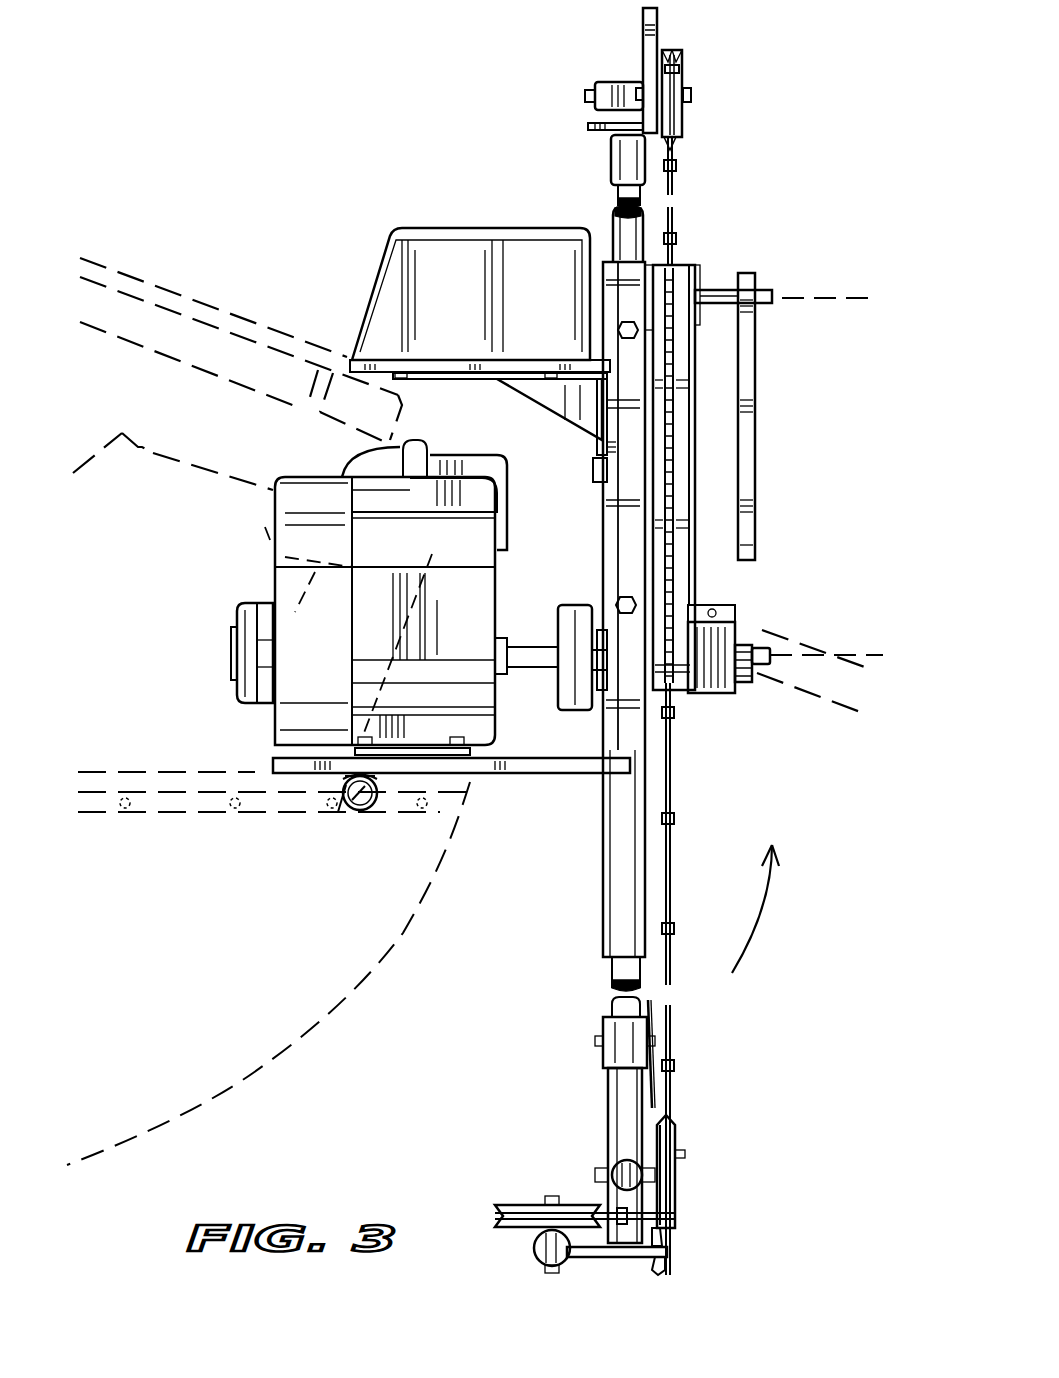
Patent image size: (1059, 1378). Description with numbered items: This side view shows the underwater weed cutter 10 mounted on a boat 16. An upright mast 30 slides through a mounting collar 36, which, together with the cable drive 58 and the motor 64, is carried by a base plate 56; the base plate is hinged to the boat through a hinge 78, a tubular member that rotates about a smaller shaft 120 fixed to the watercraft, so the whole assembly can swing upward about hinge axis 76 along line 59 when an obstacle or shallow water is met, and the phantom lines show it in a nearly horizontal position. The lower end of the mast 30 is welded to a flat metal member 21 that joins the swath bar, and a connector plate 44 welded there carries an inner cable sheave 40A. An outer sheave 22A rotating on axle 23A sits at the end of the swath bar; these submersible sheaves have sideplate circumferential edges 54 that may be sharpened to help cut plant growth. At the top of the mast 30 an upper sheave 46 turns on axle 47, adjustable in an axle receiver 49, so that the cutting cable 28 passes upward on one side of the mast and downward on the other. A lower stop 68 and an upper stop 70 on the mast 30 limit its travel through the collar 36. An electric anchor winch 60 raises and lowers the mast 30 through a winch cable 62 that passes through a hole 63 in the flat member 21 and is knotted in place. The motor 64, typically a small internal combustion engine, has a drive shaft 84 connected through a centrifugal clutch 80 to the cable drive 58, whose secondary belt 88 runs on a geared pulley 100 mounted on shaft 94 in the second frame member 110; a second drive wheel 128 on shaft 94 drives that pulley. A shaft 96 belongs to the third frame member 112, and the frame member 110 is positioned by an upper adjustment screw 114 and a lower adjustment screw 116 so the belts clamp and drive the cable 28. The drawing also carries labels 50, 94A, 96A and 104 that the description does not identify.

The underwater weed cutter 10 is at (430, 200).
The motor powered boat 16 is at (196, 950).
The flat metal member 21 is at (605, 1258).
The outer sheave 22A is at (530, 1205).
The axle 23A is at (548, 1270).
The cable 28 is at (675, 180).
The upright mast 30 is at (620, 1080).
The mounting collar 36 is at (607, 873).
The inner cable sheave 40A is at (678, 1148).
The connector plate 44 is at (612, 1168).
The upper sheave 46 is at (683, 125).
The axle 47 is at (690, 98).
The axle receiver 49 is at (645, 30).
The cable 50 is at (674, 818).
The sideplate circumferential edges 54 is at (678, 1125).
The base plate 56 is at (610, 778).
The cable drive 58 is at (745, 506).
The line of swinging movement 59 is at (763, 908).
The electric anchor winch 60 is at (469, 293).
The winch cable 62 is at (655, 1085).
The hole 63 is at (668, 1250).
The motor 64 is at (428, 546).
The lower stop 68 is at (612, 1025).
The upper stop 70 is at (612, 158).
The hinge axis 76 is at (347, 808).
The hinge 78 is at (362, 806).
The centrifugal clutch 80 is at (566, 690).
The drive shaft 84 is at (552, 648).
The secondary belt 88 is at (681, 447).
The shaft 94 is at (762, 640).
The sprocket axis 94A is at (883, 655).
The shaft 96 is at (772, 296).
The support bar axis 96A is at (862, 298).
The geared pulley 100 is at (690, 690).
The chain guide rail 104 is at (697, 270).
The second frame member 110 is at (622, 385).
The third frame member 112 is at (757, 380).
The upper adjustment screw 114 is at (618, 330).
The lower adjustment screw 116 is at (617, 605).
The shaft 120 is at (372, 803).
The second drive wheel 128 is at (736, 690).